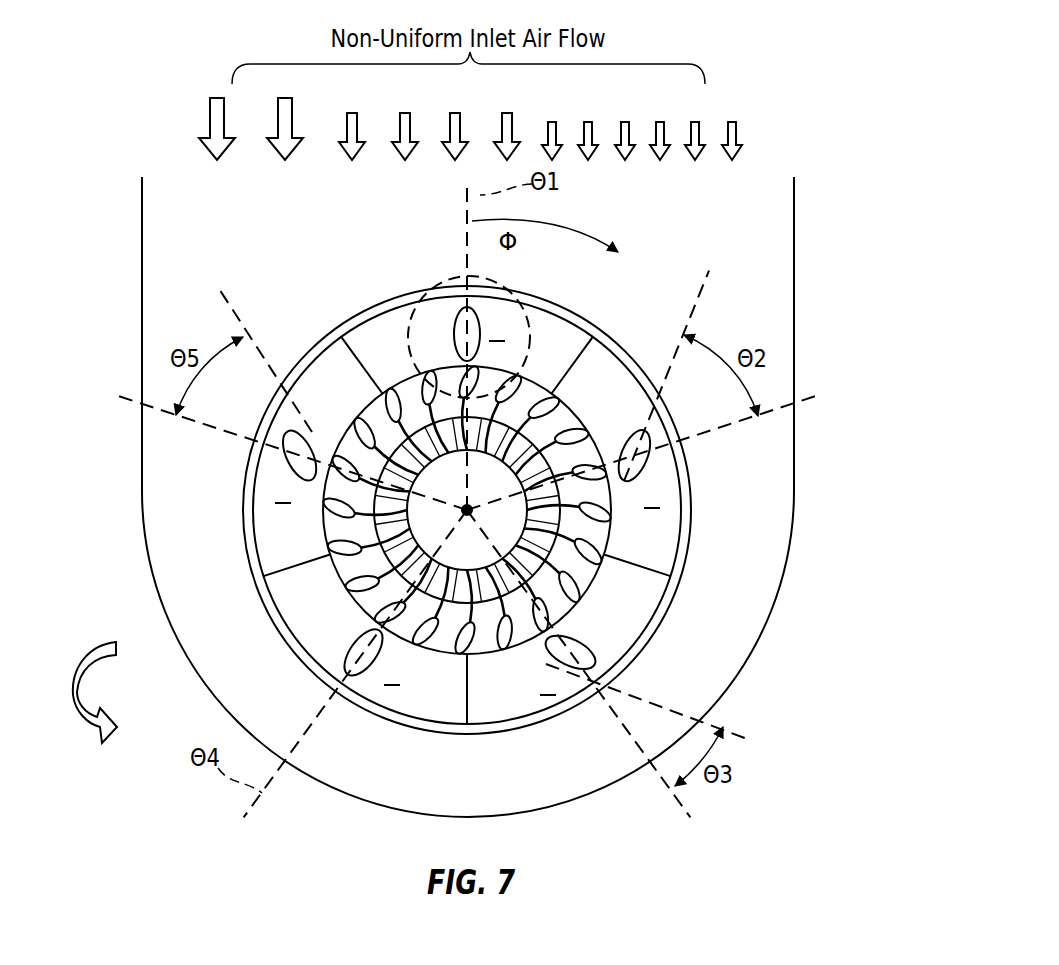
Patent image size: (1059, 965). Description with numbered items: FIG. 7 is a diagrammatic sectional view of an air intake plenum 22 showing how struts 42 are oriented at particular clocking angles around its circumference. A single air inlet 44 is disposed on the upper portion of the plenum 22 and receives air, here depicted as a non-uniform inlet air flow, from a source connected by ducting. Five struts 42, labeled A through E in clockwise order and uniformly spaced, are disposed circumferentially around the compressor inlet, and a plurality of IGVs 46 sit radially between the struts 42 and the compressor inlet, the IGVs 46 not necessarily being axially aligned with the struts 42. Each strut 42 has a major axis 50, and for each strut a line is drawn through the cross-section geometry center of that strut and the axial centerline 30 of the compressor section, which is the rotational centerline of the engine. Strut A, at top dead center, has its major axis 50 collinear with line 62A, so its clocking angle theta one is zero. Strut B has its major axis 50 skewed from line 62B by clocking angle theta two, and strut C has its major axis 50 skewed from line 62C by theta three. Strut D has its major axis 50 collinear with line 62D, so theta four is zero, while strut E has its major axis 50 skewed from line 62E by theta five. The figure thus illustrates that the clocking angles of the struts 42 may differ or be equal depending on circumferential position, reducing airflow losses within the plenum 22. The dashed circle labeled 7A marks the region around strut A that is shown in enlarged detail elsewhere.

The air intake plenum 22 is at (782, 78).
The air inlet 44 is at (757, 170).
The axial centerline 30 is at (480, 614).
The IGVs 46 is at (467, 515).
The strut 42 is at (655, 458).
The major axis 50 is at (468, 252).
The line 62A is at (465, 205).
The line 62B is at (808, 410).
The line 62C is at (682, 815).
The line 62D is at (280, 775).
The line 62E is at (122, 405).
The detail view region 7A is at (392, 340).